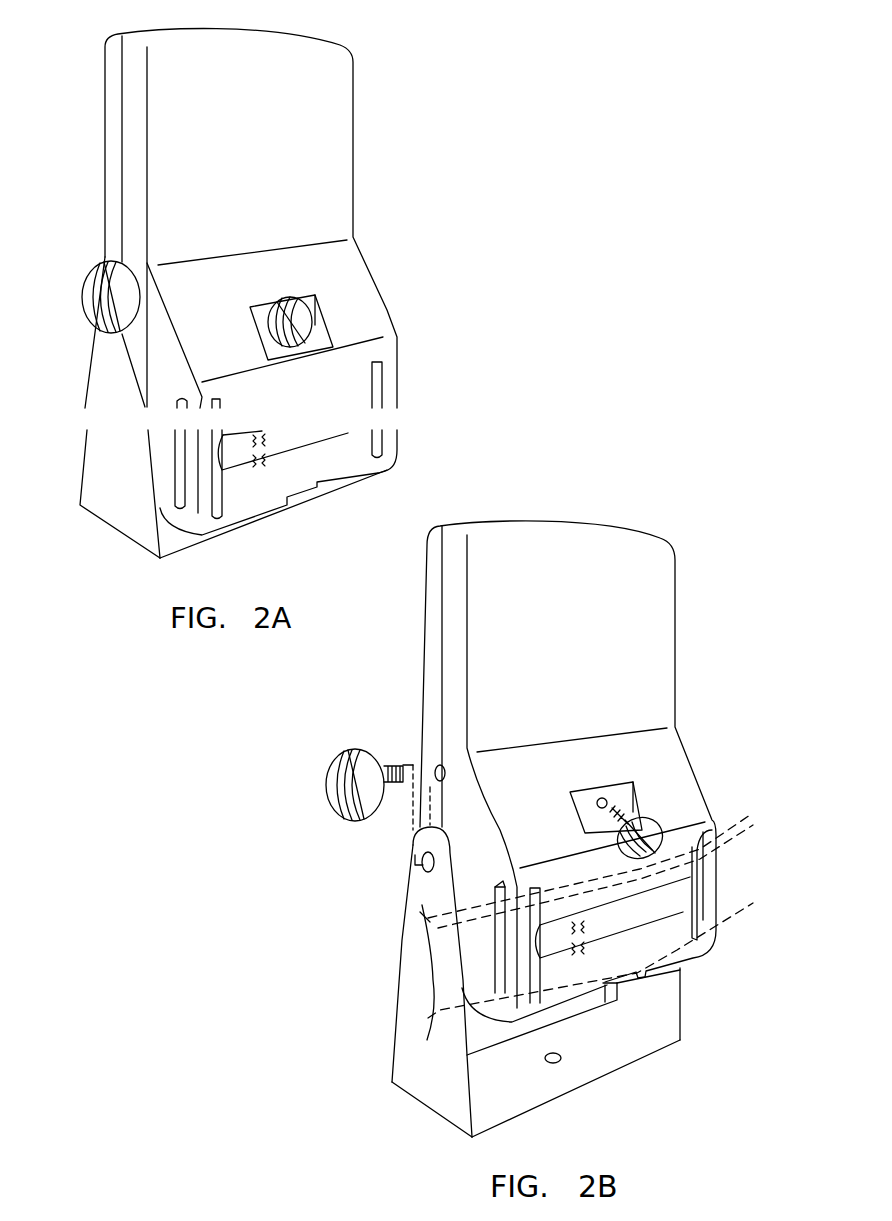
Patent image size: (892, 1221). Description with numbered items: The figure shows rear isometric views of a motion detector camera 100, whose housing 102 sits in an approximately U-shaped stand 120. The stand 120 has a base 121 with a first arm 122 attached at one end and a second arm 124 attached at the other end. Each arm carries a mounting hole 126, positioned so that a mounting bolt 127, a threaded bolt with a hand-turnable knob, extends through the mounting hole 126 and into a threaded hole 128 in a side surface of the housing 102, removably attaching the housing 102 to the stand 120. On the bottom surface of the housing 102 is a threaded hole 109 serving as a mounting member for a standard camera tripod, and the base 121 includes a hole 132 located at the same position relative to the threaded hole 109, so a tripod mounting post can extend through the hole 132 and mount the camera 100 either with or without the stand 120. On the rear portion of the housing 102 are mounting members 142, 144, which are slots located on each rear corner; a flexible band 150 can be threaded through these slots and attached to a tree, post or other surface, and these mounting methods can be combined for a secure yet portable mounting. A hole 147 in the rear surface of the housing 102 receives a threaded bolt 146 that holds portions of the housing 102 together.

In FIG. 2A, the motion detector camera 100 is at (239, 304).
In FIG. 2B, the motion detector camera 100 is at (548, 830).
In FIG. 2A, the housing 102 is at (352, 132).
In FIG. 2B, the housing 102 is at (574, 764).
In FIG. 2A, the threaded hole 109 is at (268, 450).
In FIG. 2B, the threaded hole 109 is at (590, 937).
In FIG. 2A, the stand 120 is at (218, 506).
In FIG. 2B, the stand 120 is at (540, 1056).
In FIG. 2A, the base 121 is at (180, 548).
In FIG. 2B, the base 121 is at (528, 1110).
In FIG. 2A, the first arm 122 is at (88, 447).
In FIG. 2B, the first arm 122 is at (398, 1022).
In FIG. 2B, the second arm 124 is at (680, 1000).
In FIG. 2B, the mounting hole 126 is at (423, 872).
In FIG. 2A, the mounting bolt 127 is at (82, 291).
In FIG. 2B, the mounting bolt 127 is at (327, 777).
In FIG. 2B, the hole 128 is at (433, 760).
In FIG. 2B, the hole 132 is at (560, 1055).
In FIG. 2A, the mounting member 142 is at (222, 403).
In FIG. 2B, the mounting member 142 is at (535, 885).
In FIG. 2A, the mounting member 144 is at (382, 372).
In FIG. 2B, the mounting member 144 is at (713, 840).
In FIG. 2B, the threaded bolt 146 is at (658, 817).
In FIG. 2B, the hole 147 is at (602, 798).
In FIG. 2B, the flexible band 150 is at (753, 808).